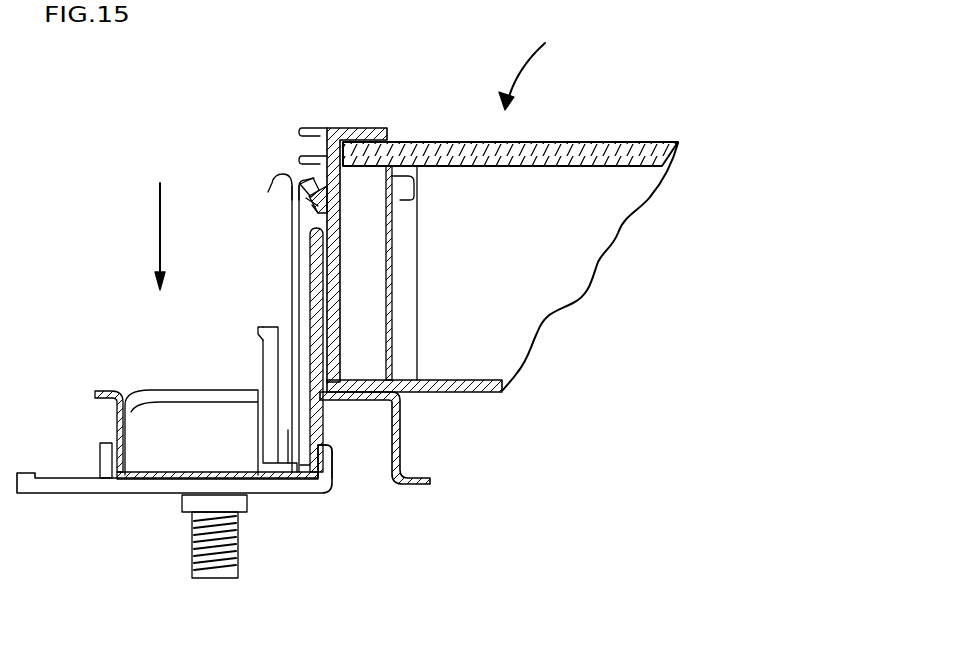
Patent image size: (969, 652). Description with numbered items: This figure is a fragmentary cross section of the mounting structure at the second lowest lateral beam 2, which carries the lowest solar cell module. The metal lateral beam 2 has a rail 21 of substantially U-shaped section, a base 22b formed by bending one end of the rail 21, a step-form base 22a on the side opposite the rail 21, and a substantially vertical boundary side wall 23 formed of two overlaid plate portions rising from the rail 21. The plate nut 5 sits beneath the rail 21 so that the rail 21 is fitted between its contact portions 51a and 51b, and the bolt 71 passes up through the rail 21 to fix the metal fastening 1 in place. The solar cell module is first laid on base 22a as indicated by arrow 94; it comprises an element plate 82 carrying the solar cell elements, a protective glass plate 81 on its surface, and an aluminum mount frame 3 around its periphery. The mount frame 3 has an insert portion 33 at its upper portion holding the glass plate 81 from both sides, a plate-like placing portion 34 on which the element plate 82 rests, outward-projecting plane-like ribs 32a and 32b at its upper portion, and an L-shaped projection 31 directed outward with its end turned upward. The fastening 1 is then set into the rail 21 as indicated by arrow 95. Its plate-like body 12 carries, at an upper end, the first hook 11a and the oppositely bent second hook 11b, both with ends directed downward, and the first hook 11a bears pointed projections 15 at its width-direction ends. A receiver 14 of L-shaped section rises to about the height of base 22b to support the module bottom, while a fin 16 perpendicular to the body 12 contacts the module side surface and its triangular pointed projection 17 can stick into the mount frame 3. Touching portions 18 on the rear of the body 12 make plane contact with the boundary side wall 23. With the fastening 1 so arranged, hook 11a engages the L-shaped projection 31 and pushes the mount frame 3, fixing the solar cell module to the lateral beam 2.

The fastening 1 is at (287, 433).
The lateral beam 2 is at (405, 433).
The mount frame 3 is at (335, 258).
The plate nut 5 is at (67, 488).
The hook 11a is at (313, 183).
The hook 11b is at (272, 188).
The body 12 is at (295, 283).
The receiver 14 is at (172, 400).
The projection 15 is at (323, 195).
The fin 16 is at (278, 369).
The projection 17 is at (262, 336).
The touching portion 18 is at (307, 423).
The rail 21 is at (135, 478).
The base 22a is at (377, 380).
The base 22b is at (105, 390).
The boundary side wall 23 is at (312, 238).
The L-shaped projection 31 is at (318, 192).
The rib 32a is at (298, 132).
The rib 32b is at (298, 160).
The insert portion 33 is at (366, 138).
The placing portion 34 is at (502, 388).
The contact portion 51a is at (327, 455).
The contact portion 51b is at (106, 455).
The bolt 71 is at (215, 572).
The glass plate 81 is at (546, 142).
The element plate 82 is at (608, 183).
The arrow 94 is at (522, 67).
The arrow 95 is at (160, 229).